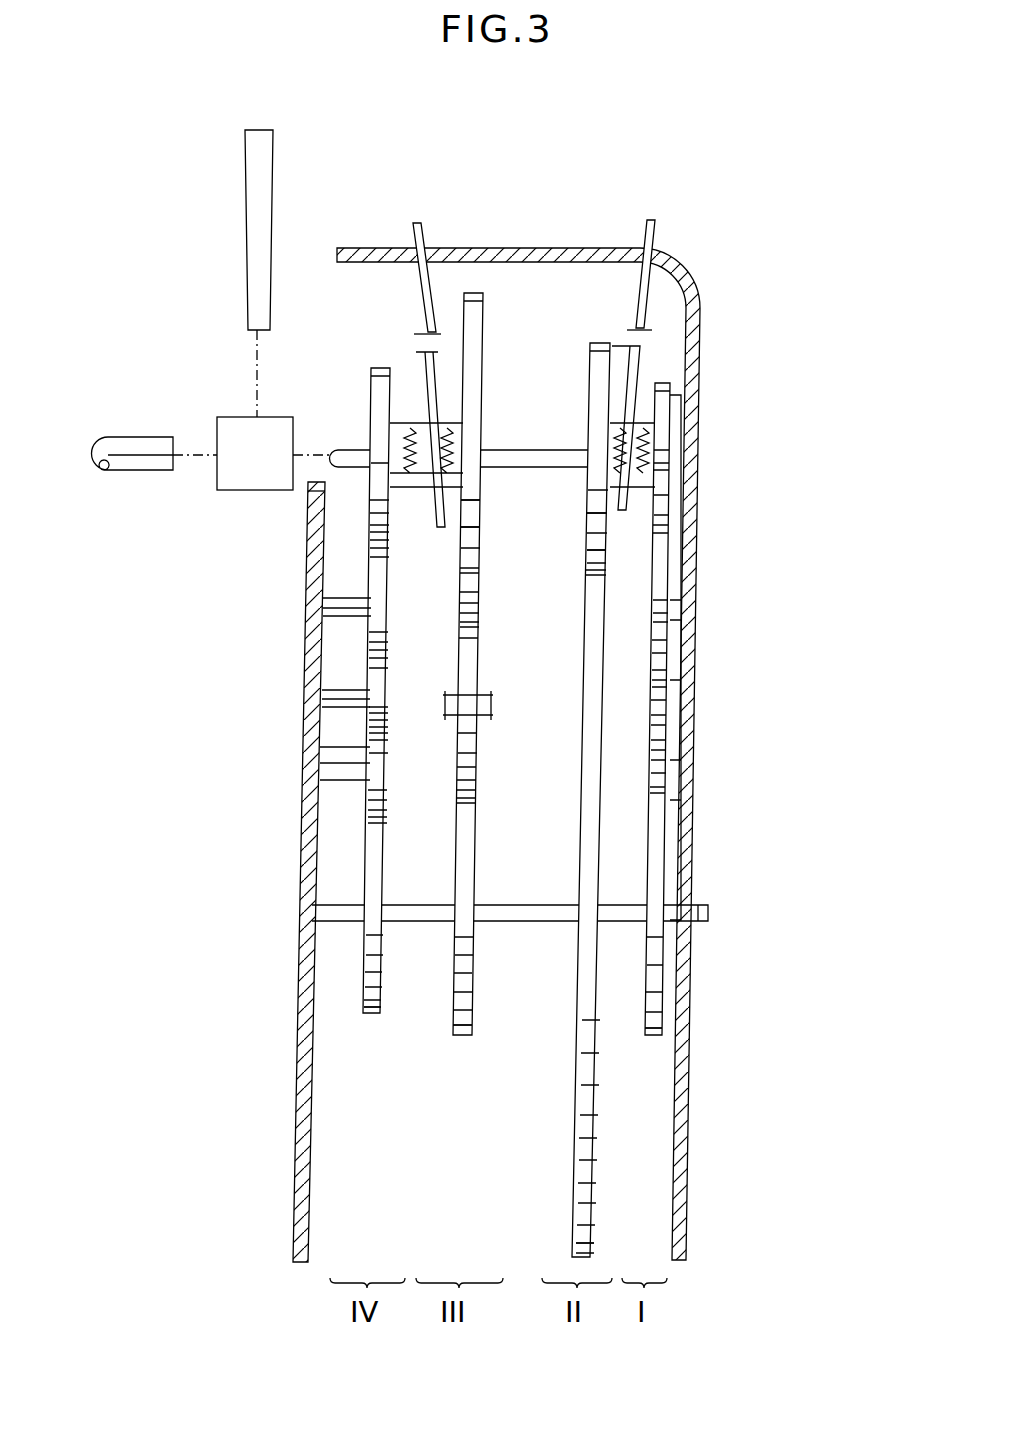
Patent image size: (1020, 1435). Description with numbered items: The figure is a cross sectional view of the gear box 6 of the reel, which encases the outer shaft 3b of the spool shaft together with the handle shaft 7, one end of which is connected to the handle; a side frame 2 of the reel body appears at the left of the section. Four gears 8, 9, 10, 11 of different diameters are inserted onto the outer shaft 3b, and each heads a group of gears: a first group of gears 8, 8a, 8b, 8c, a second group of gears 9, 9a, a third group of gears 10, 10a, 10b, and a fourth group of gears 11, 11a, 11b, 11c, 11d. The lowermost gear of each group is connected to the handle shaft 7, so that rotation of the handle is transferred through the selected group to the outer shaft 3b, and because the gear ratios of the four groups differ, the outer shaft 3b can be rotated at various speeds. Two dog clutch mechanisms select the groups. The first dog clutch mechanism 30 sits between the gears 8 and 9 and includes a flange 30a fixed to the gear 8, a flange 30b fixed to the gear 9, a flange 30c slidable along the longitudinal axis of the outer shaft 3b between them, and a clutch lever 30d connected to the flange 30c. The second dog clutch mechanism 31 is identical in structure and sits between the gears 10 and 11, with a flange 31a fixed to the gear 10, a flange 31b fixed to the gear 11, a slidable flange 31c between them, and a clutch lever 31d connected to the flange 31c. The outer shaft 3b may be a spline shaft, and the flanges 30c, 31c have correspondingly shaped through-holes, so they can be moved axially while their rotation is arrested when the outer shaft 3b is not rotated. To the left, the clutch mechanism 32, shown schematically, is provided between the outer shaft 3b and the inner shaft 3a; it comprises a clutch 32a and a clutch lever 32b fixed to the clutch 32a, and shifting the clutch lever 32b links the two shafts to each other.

The side frame 2 is at (312, 690).
The inner shaft 3a is at (116, 438).
The outer shaft 3b is at (540, 468).
The gear box 6 is at (714, 508).
The handle shaft 7 is at (540, 922).
The gear 8 is at (693, 727).
The gear 8a is at (660, 582).
The gear 8b is at (660, 715).
The gear 8c is at (652, 1040).
The gear 9 is at (555, 770).
The gear 9a is at (574, 1178).
The gear 10 is at (491, 703).
The gear 10a is at (490, 700).
The gear 10b is at (462, 1040).
The gear 11 is at (294, 707).
The gear 11a is at (372, 585).
The gear 11b is at (372, 672).
The gear 11c is at (372, 750).
The gear 11d is at (360, 1068).
The first dog clutch mechanism 30 is at (655, 378).
The flange 30a is at (660, 432).
The flange 30b is at (602, 542).
The flange 30c is at (618, 412).
The clutch lever 30d is at (658, 245).
The second dog clutch mechanism 31 is at (459, 361).
The flange 31a is at (455, 500).
The flange 31b is at (406, 430).
The flange 31c is at (436, 492).
The clutch lever 31d is at (426, 248).
The clutch mechanism 32 is at (196, 333).
The clutch 32a is at (215, 488).
The clutch lever 32b is at (246, 162).